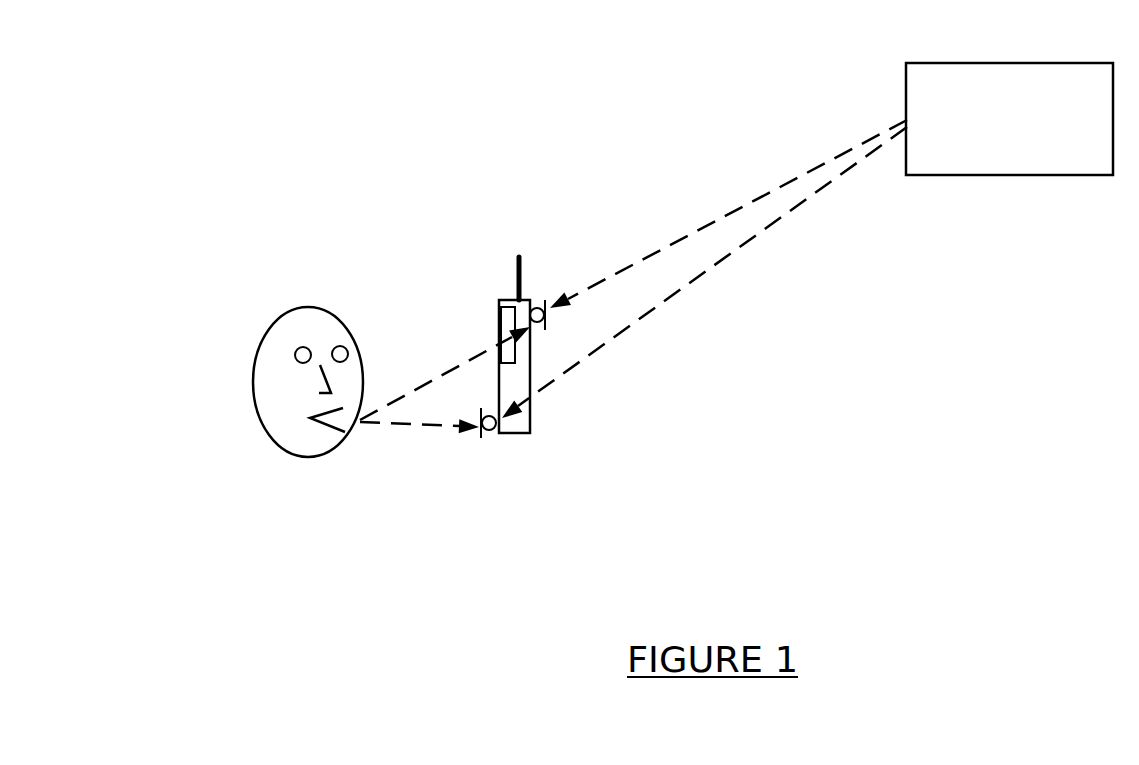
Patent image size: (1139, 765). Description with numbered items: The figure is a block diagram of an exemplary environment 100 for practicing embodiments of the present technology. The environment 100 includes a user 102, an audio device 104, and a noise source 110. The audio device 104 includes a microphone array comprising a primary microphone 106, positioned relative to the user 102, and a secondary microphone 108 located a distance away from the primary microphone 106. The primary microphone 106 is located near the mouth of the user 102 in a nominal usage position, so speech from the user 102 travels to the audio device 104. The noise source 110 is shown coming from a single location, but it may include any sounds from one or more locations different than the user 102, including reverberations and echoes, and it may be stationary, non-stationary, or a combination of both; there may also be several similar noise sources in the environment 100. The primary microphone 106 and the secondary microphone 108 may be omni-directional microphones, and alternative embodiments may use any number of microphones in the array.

The environment 100 is at (442, 113).
The user 102 is at (310, 460).
The audio device 104 is at (530, 408).
The primary microphone 106 is at (492, 433).
The secondary microphone 108 is at (535, 307).
The noise source 110 is at (1015, 175).